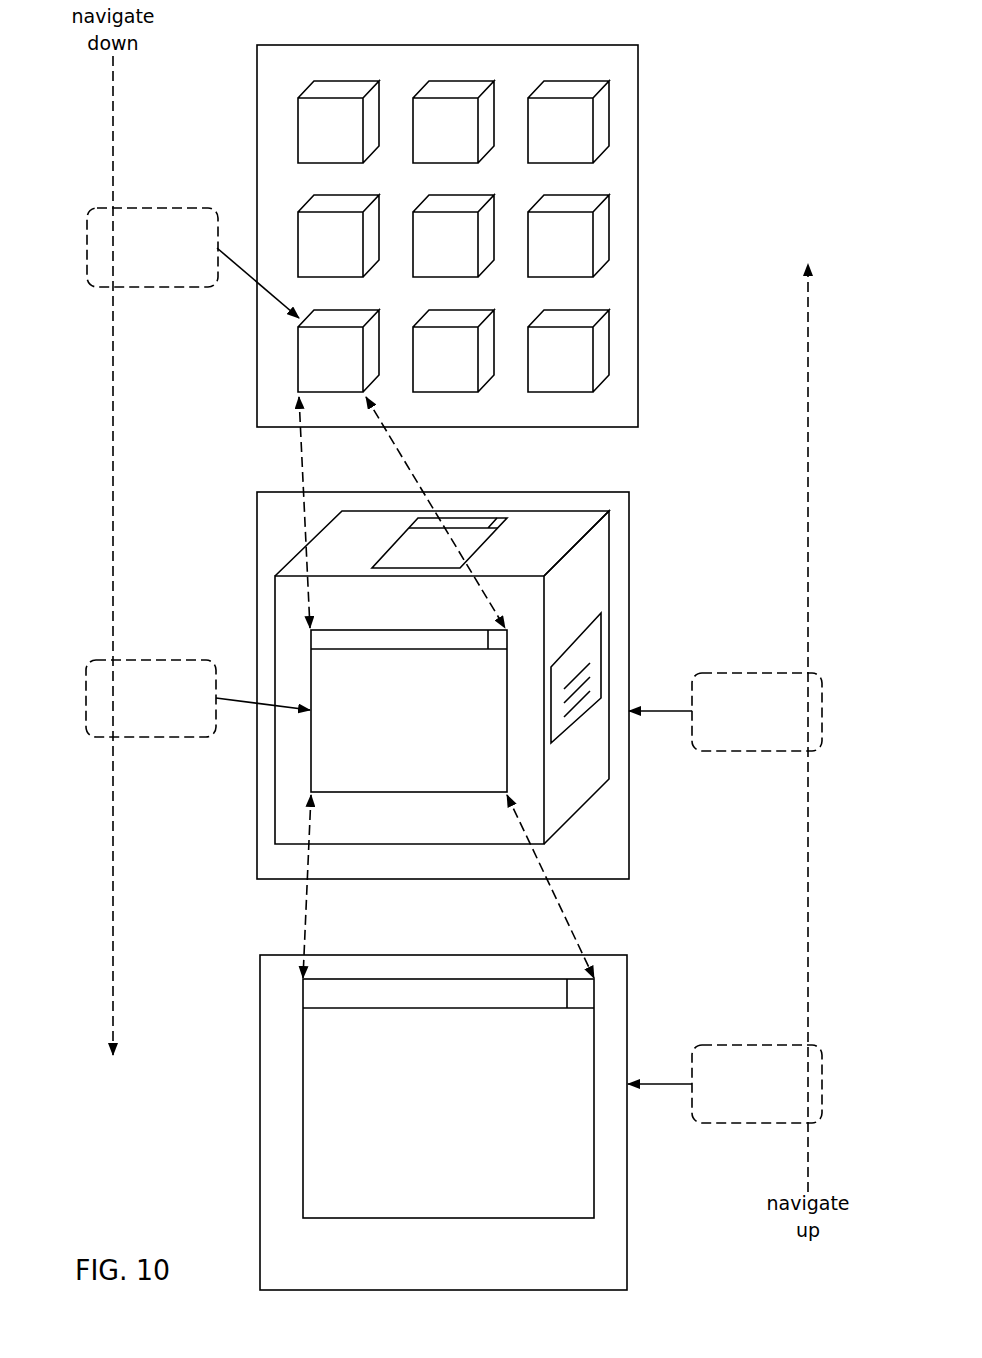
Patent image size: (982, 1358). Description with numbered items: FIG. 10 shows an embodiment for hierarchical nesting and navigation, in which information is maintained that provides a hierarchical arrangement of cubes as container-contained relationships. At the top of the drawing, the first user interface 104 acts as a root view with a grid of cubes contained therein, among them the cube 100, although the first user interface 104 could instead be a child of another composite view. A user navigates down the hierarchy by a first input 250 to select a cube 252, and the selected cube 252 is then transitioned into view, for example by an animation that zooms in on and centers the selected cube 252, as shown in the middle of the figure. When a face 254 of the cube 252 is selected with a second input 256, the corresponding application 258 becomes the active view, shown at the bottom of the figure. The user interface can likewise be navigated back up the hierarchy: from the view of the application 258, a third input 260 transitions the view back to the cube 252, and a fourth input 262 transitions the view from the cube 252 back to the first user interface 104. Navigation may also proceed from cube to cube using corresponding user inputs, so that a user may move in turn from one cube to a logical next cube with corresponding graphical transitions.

The first user interface 104 is at (679, 65).
The cube 252 is at (348, 366).
The first input 250 is at (80, 231).
The cube 100 is at (720, 514).
The face 254 is at (438, 730).
The second input 256 is at (79, 681).
The application 258 is at (255, 972).
The third input 260 is at (776, 1041).
The fourth input 262 is at (765, 666).